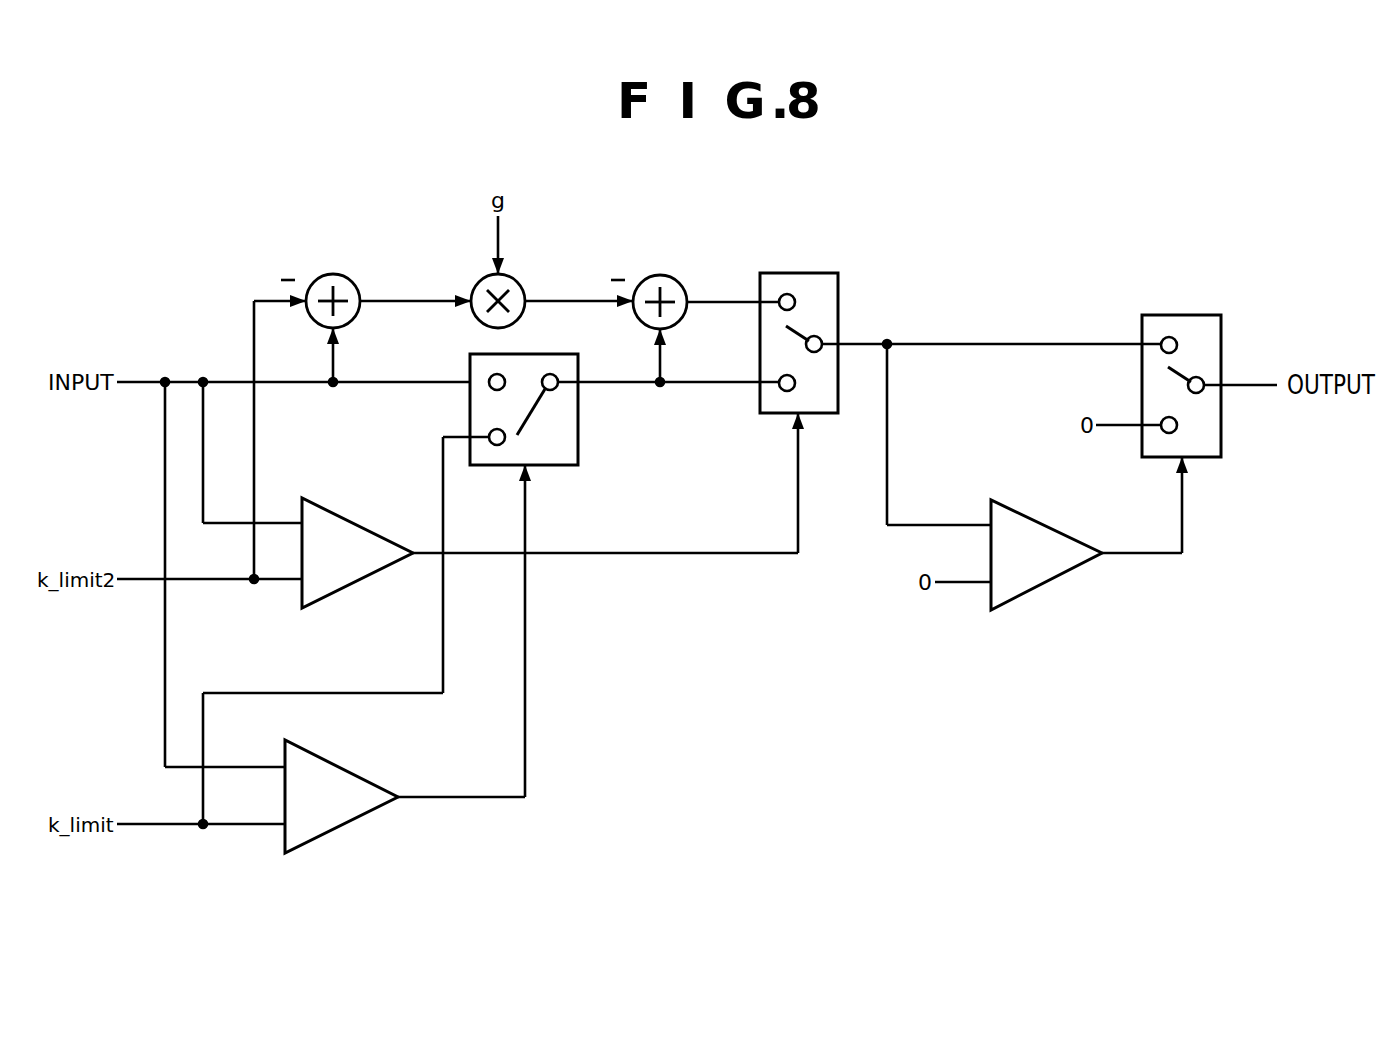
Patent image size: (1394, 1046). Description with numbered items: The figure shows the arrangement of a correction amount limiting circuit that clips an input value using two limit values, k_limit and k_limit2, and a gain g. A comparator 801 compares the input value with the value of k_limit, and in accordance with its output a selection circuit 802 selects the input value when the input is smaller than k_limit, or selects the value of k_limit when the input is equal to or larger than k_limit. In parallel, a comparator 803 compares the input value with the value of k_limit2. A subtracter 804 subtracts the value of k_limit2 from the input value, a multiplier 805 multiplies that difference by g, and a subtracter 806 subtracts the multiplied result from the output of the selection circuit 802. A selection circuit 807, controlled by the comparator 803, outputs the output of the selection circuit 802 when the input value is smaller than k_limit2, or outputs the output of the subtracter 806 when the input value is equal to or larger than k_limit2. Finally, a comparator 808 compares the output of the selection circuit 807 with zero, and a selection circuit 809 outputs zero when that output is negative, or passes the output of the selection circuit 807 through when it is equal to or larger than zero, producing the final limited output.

The comparator 801 is at (333, 761).
The selection circuit 802 is at (578, 432).
The comparator 803 is at (350, 521).
The subtracter 804 is at (351, 283).
The multiplier 805 is at (516, 283).
The subtracter 806 is at (678, 284).
The selection circuit 807 is at (798, 273).
The comparator 808 is at (1040, 521).
The selection circuit 809 is at (1182, 315).